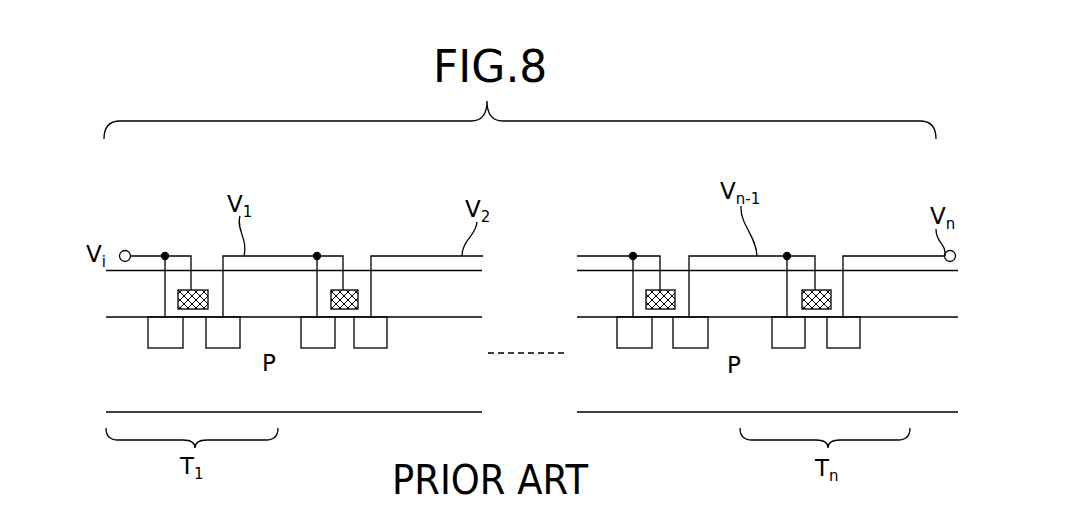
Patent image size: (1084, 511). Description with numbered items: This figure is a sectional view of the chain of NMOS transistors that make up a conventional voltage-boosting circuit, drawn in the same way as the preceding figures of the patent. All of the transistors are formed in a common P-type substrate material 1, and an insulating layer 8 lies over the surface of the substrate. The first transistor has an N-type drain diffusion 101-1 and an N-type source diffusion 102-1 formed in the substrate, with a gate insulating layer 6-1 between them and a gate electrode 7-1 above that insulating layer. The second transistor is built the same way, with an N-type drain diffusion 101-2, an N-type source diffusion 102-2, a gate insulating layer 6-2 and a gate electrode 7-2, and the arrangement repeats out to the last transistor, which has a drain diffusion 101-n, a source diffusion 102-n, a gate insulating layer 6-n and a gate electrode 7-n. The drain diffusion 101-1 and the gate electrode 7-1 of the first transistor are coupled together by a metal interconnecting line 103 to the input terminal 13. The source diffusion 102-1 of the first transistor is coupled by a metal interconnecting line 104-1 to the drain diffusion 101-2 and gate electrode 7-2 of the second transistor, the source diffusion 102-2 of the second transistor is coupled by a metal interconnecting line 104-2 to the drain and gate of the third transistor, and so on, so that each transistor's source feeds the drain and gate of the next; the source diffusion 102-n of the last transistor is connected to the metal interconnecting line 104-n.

The P-type substrate material 1 is at (437, 368).
The insulating layer 8 is at (455, 295).
The input terminal 13 is at (124, 250).
The metal interconnecting line 103 is at (150, 255).
The gate electrode 7-1 is at (208, 288).
The gate electrode 7-2 is at (353, 288).
The gate electrode 7-n is at (822, 288).
The gate insulating layer 6-1 is at (208, 312).
The gate insulating layer 6-2 is at (358, 312).
The gate insulating layer 6-n is at (830, 312).
The N-type drain diffusion 101-1 is at (160, 349).
The N-type source diffusion 102-1 is at (215, 349).
The N-type drain diffusion 101-2 is at (318, 349).
The N-type source diffusion 102-2 is at (370, 349).
The N-type drain diffusion 101-n is at (783, 349).
The N-type source diffusion 102-n is at (838, 349).
The metal interconnecting line 104-1 is at (290, 256).
The metal interconnecting line 104-2 is at (390, 256).
The metal interconnecting line 104-n is at (907, 256).